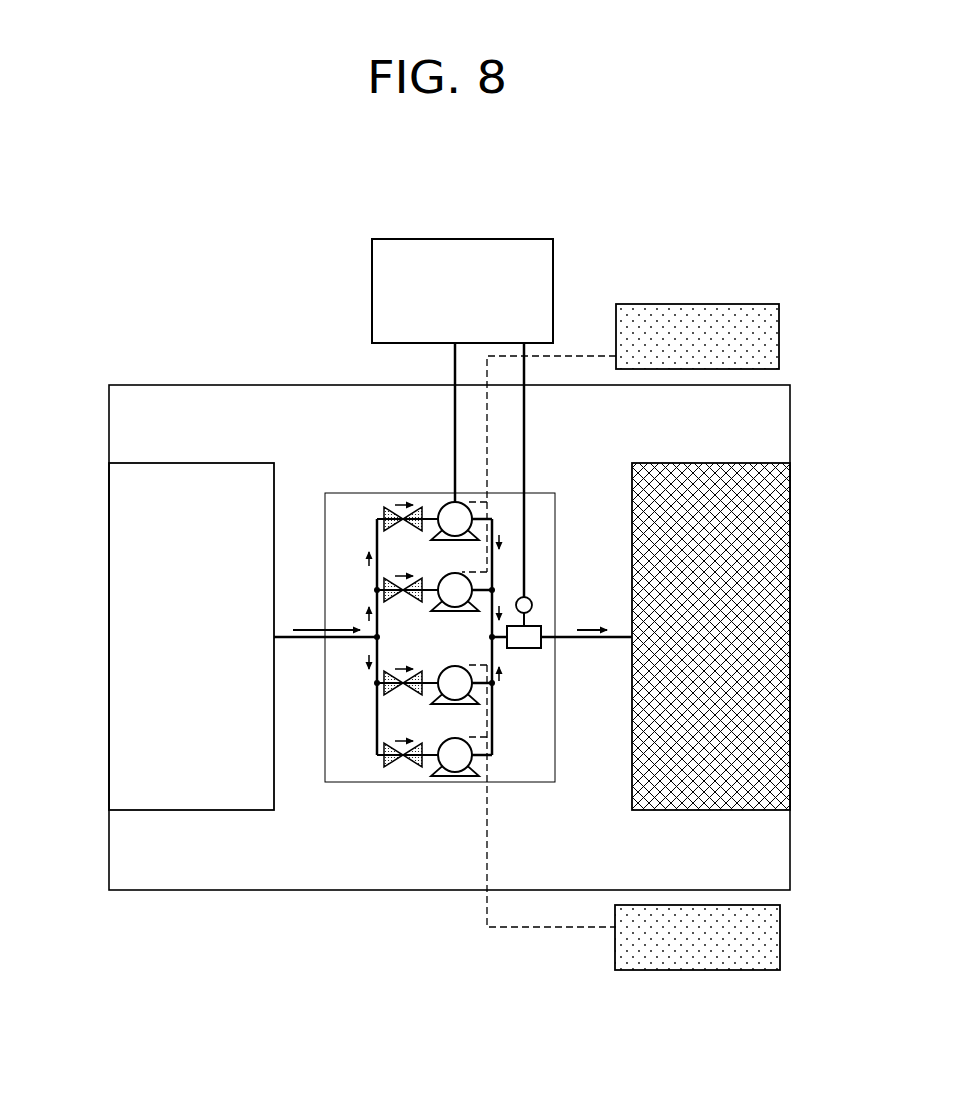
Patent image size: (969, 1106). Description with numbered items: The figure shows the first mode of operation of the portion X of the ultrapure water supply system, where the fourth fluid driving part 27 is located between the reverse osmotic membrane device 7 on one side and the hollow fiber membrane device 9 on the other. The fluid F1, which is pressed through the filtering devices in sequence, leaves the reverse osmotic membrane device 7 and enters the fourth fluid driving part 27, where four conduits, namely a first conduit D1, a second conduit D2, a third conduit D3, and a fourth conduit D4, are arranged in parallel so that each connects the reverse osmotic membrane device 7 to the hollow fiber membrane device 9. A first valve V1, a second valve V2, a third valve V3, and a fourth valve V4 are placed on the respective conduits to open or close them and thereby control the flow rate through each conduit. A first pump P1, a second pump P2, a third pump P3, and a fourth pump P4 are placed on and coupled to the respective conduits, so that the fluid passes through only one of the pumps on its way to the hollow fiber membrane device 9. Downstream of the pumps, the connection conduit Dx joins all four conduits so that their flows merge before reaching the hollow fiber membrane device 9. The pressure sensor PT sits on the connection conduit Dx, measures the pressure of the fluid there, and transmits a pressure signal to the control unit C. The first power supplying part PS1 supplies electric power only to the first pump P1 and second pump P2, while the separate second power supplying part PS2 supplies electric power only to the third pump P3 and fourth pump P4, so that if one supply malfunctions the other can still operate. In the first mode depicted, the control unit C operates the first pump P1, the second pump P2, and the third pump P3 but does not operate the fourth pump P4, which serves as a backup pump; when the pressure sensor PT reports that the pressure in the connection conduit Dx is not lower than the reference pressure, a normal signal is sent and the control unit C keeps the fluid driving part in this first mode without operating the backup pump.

The portion X is at (143, 385).
The control unit C is at (459, 239).
The first power supplying part PS1 is at (696, 304).
The second power supplying part PS2 is at (697, 970).
The reverse osmotic membrane device 7 is at (136, 810).
The hollow fiber membrane device 9 is at (757, 810).
The fourth fluid driving part 27 is at (357, 782).
The fluid F1 is at (305, 630).
The first valve V1 is at (384, 508).
The second valve V2 is at (384, 582).
The third valve V3 is at (384, 675).
The fourth valve V4 is at (384, 748).
The first pump P1 is at (443, 505).
The second pump P2 is at (443, 577).
The third pump P3 is at (443, 672).
The fourth pump P4 is at (443, 745).
The first conduit D1 is at (492, 519).
The second conduit D2 is at (492, 590).
The third conduit D3 is at (492, 667).
The fourth conduit D4 is at (492, 740).
The pressure sensor PT is at (531, 600).
The connection conduit Dx is at (541, 626).